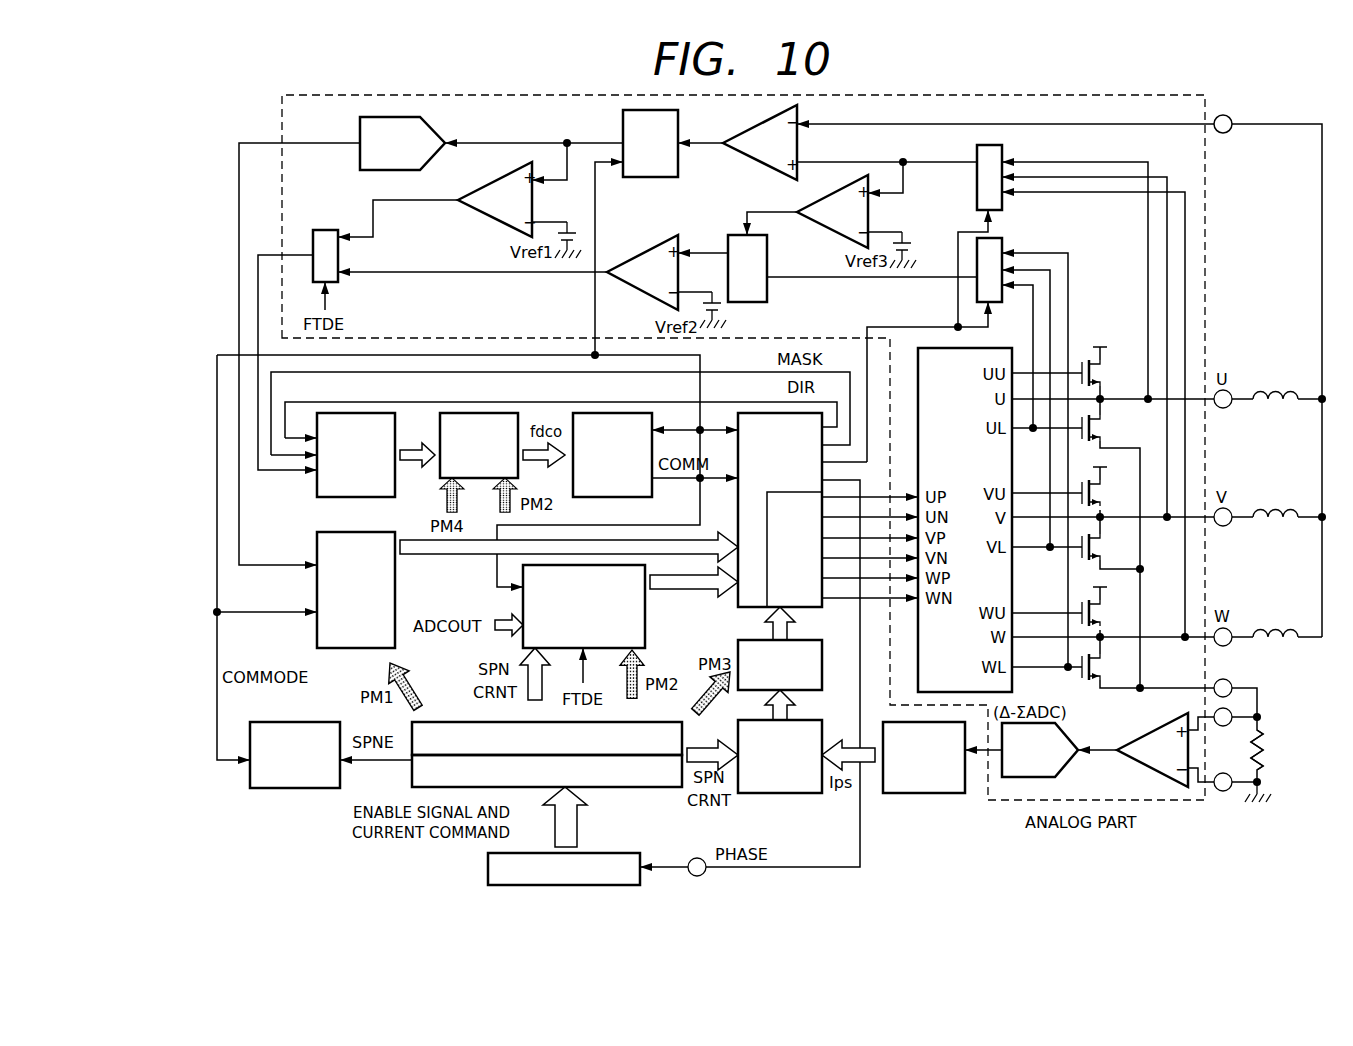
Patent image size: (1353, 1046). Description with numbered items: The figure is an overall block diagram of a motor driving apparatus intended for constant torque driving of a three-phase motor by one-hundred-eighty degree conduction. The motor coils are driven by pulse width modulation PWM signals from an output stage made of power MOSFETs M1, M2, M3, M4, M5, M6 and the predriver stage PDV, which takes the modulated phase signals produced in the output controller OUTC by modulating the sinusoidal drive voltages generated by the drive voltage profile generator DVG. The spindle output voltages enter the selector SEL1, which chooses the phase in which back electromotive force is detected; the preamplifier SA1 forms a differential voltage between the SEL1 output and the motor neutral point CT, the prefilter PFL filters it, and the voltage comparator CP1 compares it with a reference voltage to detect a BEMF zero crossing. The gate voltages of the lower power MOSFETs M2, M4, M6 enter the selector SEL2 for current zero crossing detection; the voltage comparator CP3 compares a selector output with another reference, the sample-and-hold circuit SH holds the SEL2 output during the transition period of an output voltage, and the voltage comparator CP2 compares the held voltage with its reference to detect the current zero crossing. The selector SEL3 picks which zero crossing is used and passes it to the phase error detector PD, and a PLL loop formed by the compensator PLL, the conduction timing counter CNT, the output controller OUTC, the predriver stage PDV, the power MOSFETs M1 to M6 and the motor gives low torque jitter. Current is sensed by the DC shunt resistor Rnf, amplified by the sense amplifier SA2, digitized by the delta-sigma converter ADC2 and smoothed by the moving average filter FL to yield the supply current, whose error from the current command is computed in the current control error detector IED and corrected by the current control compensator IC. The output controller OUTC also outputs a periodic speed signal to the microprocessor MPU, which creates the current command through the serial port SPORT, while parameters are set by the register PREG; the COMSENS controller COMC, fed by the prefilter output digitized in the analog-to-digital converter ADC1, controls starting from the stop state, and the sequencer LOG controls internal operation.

The analog-to-digital converter ADC1 is at (402, 143).
The voltage comparator CP1 is at (495, 199).
The voltage comparator CP2 is at (642, 272).
The voltage comparator CP3 is at (832, 211).
The selector SEL1 is at (1010, 173).
The selector SEL2 is at (1010, 266).
The selector SEL3 is at (324, 244).
The prefilter PFL is at (650, 143).
The preamplifier SA1 is at (760, 142).
The sense amplifier SA2 is at (1152, 750).
The sample-and-hold circuit SH is at (747, 268).
The neutral point CT is at (1222, 113).
The phase error detector PD is at (356, 455).
The compensator PLL is at (479, 445).
The conduction timing counter CNT is at (612, 455).
The output controller OUTC is at (780, 510).
The pulse width modulation PWM is at (794, 549).
The predriver stage PDV is at (965, 520).
The COMSENS controller COMC is at (356, 590).
The drive voltage profile generator DVG is at (584, 606).
The current control compensator IC is at (780, 665).
The current control error detector IED is at (780, 756).
The moving average filter FL is at (924, 757).
The Δ-Σ ADC ADC2 is at (1040, 750).
The sequencer LOG is at (295, 755).
The register PREG is at (547, 738).
The serial port SPORT is at (547, 771).
The microprocessor MPU is at (564, 869).
The DC shunt resistor Rnf is at (1274, 750).
The power MOSFET M1 is at (1106, 373).
The power MOSFET M2 is at (1106, 428).
The power MOSFET M3 is at (1106, 493).
The power MOSFET M4 is at (1106, 547).
The power MOSFET M5 is at (1106, 613).
The power MOSFET M6 is at (1106, 667).